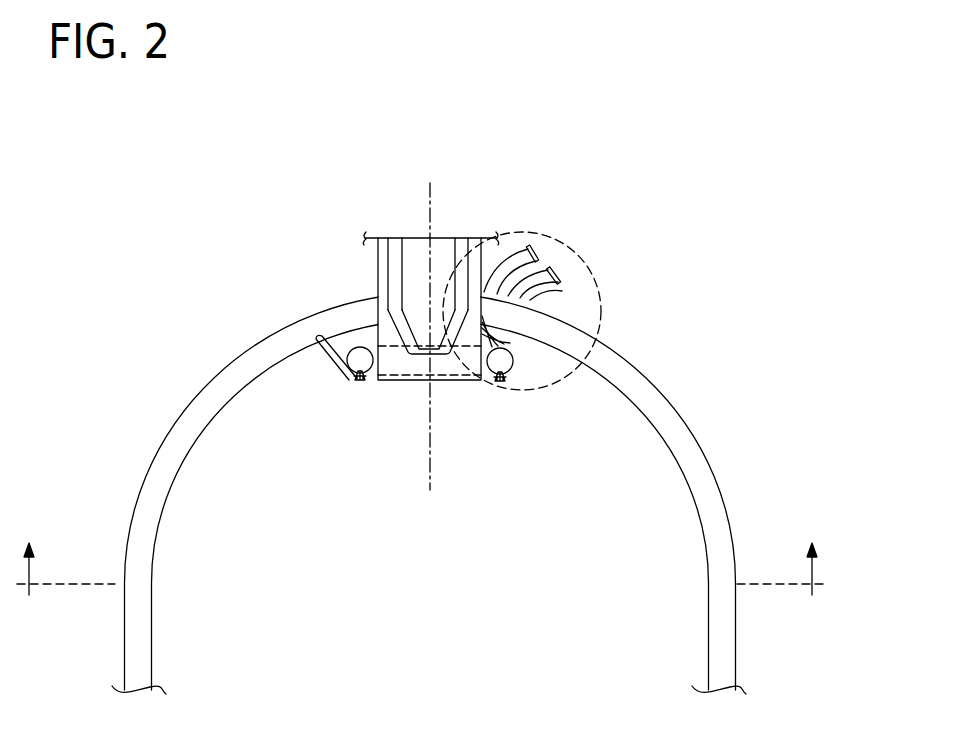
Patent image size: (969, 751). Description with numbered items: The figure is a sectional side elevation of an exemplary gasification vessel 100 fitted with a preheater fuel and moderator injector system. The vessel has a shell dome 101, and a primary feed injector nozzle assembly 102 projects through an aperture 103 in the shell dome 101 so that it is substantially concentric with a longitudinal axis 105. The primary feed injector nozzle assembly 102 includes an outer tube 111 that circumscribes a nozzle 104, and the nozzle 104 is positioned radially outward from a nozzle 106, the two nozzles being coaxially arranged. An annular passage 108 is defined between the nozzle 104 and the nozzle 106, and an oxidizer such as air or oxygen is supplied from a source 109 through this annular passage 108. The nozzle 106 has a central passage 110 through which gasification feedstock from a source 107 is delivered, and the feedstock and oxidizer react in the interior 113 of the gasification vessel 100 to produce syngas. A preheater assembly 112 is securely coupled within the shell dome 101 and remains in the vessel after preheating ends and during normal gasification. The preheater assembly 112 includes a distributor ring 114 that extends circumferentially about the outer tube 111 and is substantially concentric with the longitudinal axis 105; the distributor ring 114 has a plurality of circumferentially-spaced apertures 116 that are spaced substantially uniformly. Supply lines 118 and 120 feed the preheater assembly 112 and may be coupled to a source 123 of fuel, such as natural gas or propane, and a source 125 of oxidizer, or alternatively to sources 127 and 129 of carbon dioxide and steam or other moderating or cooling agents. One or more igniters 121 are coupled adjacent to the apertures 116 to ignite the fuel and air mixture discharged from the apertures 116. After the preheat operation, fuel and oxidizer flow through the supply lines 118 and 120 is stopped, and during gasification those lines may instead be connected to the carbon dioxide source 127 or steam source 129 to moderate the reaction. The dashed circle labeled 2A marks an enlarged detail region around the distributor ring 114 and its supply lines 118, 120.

The gasification vessel 100 is at (186, 212).
The shell dome 101 is at (152, 477).
The primary feed injector nozzle assembly 102 is at (366, 229).
The aperture 103 is at (513, 266).
The nozzle 104 is at (395, 261).
The longitudinal axis 105 is at (426, 487).
The nozzle 106 is at (378, 291).
The source of gasification feedstock 107 is at (414, 230).
The annular passage 108 is at (377, 253).
The source of oxidizer 109 is at (396, 231).
The central passage 110 is at (418, 330).
The outer tube 111 is at (378, 327).
The preheater assembly 112 is at (560, 302).
The interior 113 is at (237, 465).
The distributor ring 114 is at (506, 378).
The apertures 116 is at (372, 382).
The supply line 118 is at (486, 268).
The supply line 120 is at (566, 243).
The igniter 121 is at (345, 376).
The source of fuel 123 is at (546, 230).
The source of oxidizer 125 is at (567, 273).
The source of CO2 127 is at (548, 248).
The source of steam 129 is at (568, 288).
The detail region 2A is at (604, 372).